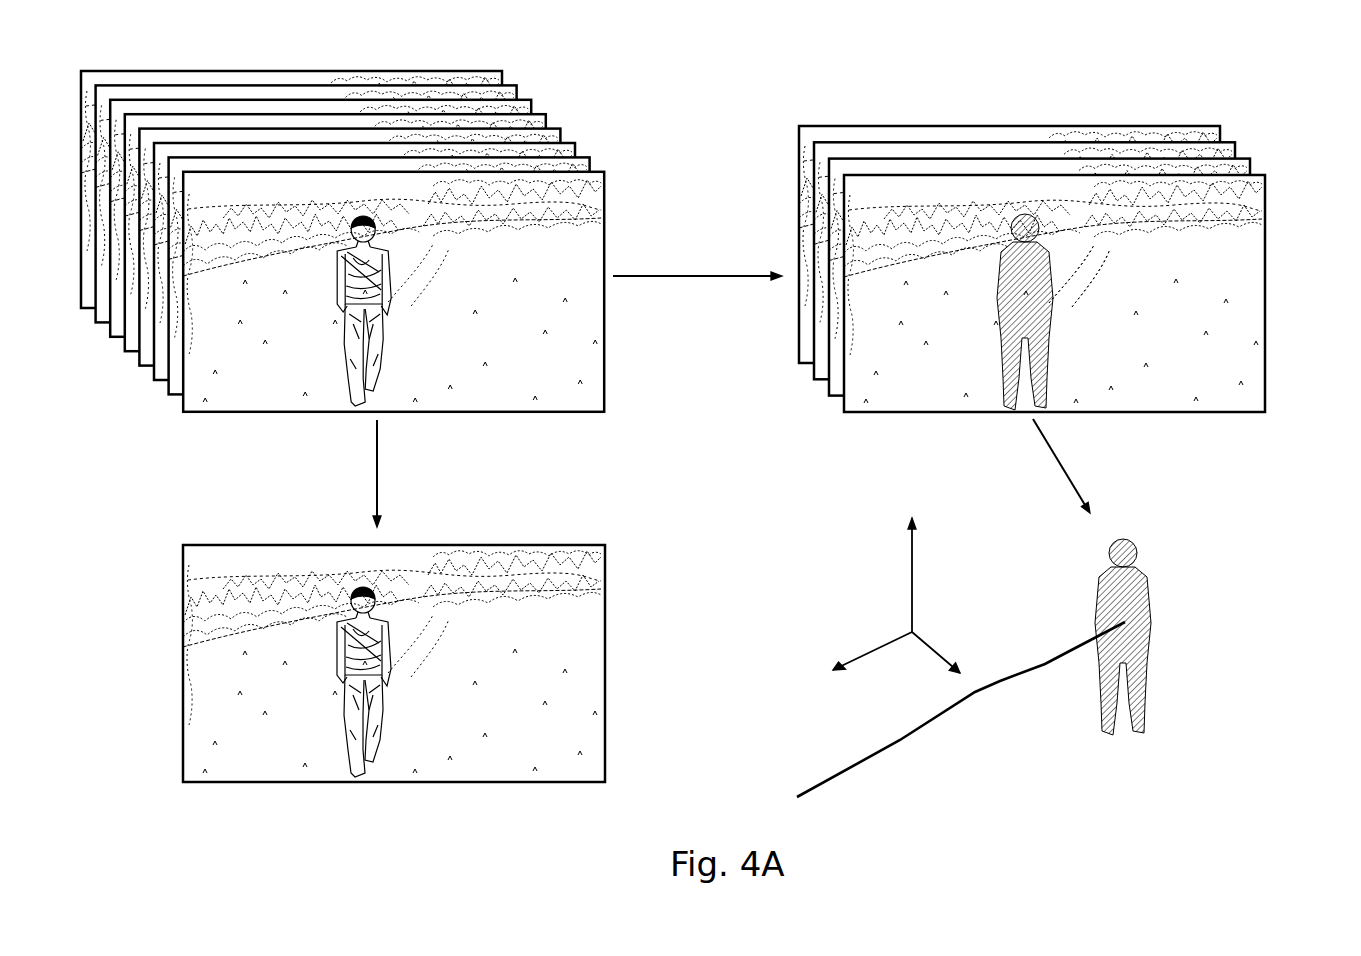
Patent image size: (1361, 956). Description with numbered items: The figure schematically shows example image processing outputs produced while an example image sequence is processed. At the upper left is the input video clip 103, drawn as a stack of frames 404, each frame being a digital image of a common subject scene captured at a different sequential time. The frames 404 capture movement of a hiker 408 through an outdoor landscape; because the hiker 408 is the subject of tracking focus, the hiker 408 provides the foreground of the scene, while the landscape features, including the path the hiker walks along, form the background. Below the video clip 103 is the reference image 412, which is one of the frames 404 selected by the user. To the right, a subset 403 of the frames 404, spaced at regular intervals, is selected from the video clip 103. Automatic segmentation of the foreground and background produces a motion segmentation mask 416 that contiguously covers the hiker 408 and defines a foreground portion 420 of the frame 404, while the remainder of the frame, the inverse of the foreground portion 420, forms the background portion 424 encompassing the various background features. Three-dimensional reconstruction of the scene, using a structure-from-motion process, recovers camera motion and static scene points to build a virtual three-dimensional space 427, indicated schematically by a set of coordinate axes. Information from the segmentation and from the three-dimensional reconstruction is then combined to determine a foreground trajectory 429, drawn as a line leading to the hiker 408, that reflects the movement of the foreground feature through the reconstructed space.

The input video clip 103 is at (420, 58).
The subset of video frames 403 is at (1170, 83).
The frame 404 is at (704, 206).
The hiker 408 is at (330, 302).
The reference image 412 is at (533, 565).
The motion segmentation mask 416 is at (1047, 333).
The foreground portion 420 is at (995, 302).
The background portion 424 is at (1152, 262).
The virtual 3-D space 427 is at (913, 685).
The foreground trajectory 429 is at (887, 748).